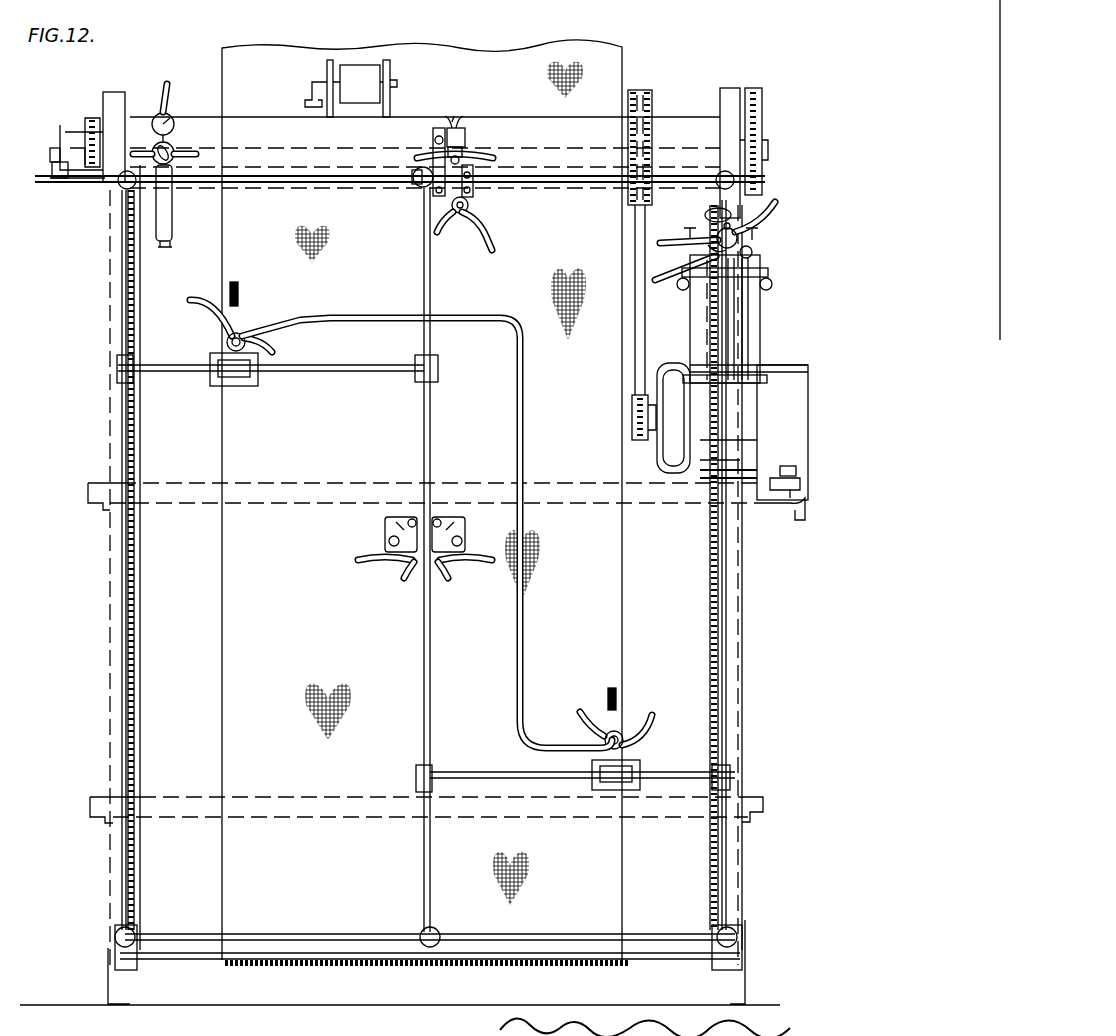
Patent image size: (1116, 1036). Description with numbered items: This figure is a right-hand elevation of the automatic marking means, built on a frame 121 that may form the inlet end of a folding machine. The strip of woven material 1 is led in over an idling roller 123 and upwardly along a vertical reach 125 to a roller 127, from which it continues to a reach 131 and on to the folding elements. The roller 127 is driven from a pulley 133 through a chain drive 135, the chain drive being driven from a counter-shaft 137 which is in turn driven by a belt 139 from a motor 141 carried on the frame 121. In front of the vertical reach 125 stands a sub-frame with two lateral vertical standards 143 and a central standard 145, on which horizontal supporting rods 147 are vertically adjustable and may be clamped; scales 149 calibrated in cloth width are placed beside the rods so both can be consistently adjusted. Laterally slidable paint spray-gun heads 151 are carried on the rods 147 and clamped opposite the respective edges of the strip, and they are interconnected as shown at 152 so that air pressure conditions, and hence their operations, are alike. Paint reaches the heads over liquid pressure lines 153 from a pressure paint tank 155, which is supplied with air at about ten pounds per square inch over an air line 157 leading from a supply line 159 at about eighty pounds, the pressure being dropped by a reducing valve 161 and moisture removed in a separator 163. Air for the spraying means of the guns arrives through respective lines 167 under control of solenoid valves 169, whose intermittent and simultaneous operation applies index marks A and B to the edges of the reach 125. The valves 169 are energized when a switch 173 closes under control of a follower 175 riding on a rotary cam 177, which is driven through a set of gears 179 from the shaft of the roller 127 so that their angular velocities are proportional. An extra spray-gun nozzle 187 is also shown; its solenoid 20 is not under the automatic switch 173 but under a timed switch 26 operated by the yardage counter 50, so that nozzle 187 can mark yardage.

The strip of woven material 1 is at (436, 976).
The solenoid 20 is at (466, 136).
The timed switch 26 is at (314, 92).
The yardage counter 50 is at (358, 72).
The frame 121 is at (112, 720).
The idling roller 123 is at (578, 946).
The vertical reach 125 is at (624, 350).
The roller 127 is at (650, 192).
The reach 131 is at (430, 62).
The pulley 133 is at (762, 118).
The chain drive 135 is at (748, 94).
The counter-shaft 137 is at (556, 150).
The belt 139 is at (646, 265).
The motor 141 is at (770, 366).
The lateral vertical standards 143 is at (122, 552).
The central standard 145 is at (422, 628).
The horizontal supporting rods 147 is at (292, 376).
The scales 149 is at (136, 524).
The paint spray-gun heads 151 is at (242, 330).
The interconnection 152 is at (344, 316).
The liquid pressure lines 153 is at (456, 236).
The pressure paint tank 155 is at (756, 324).
The air line 157 is at (186, 150).
The supply line 159 is at (170, 92).
The reducing valve 161 is at (172, 160).
The separator 163 is at (166, 220).
The lines 167 is at (476, 238).
The solenoid valves 169 is at (395, 536).
The switch 173 is at (62, 180).
The follower 175 is at (52, 152).
The rotary cam 177 is at (60, 132).
The set of gears 179 is at (100, 118).
The extra spray-gun nozzle 187 is at (466, 200).
The index mark A is at (612, 688).
The index mark B is at (240, 298).